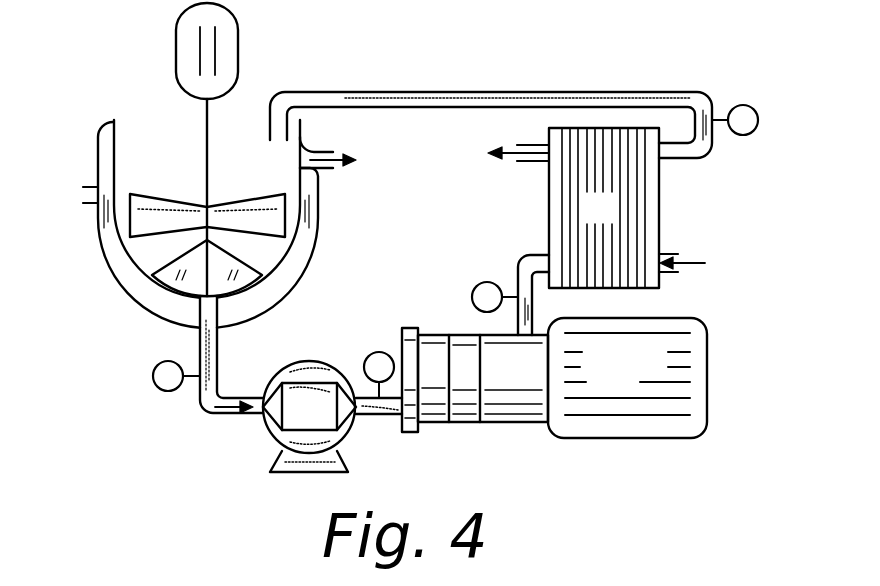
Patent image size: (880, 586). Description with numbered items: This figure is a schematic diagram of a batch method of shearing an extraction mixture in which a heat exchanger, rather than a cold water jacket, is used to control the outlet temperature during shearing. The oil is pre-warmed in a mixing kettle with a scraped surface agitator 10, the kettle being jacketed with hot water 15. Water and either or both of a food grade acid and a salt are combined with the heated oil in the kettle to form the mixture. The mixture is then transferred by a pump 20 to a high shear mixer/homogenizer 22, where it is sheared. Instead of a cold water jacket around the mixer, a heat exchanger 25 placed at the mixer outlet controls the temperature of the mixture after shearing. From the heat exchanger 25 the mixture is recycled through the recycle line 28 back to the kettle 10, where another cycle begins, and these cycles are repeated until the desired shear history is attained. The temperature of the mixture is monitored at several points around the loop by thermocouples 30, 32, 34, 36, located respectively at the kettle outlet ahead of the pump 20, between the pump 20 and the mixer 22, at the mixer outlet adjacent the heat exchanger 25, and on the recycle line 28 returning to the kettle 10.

The mixing kettle with scraped surface agitator 10 is at (206, 188).
The hot water jacket 15 is at (95, 195).
The pump 20 is at (322, 424).
The high shear mixer/homogenizer 22 is at (628, 393).
The heat exchanger 25 is at (612, 219).
The recycle line 28 is at (500, 91).
The thermocouple 30 is at (170, 360).
The thermocouple 32 is at (365, 359).
The thermocouple 34 is at (477, 286).
The thermocouple 36 is at (735, 106).